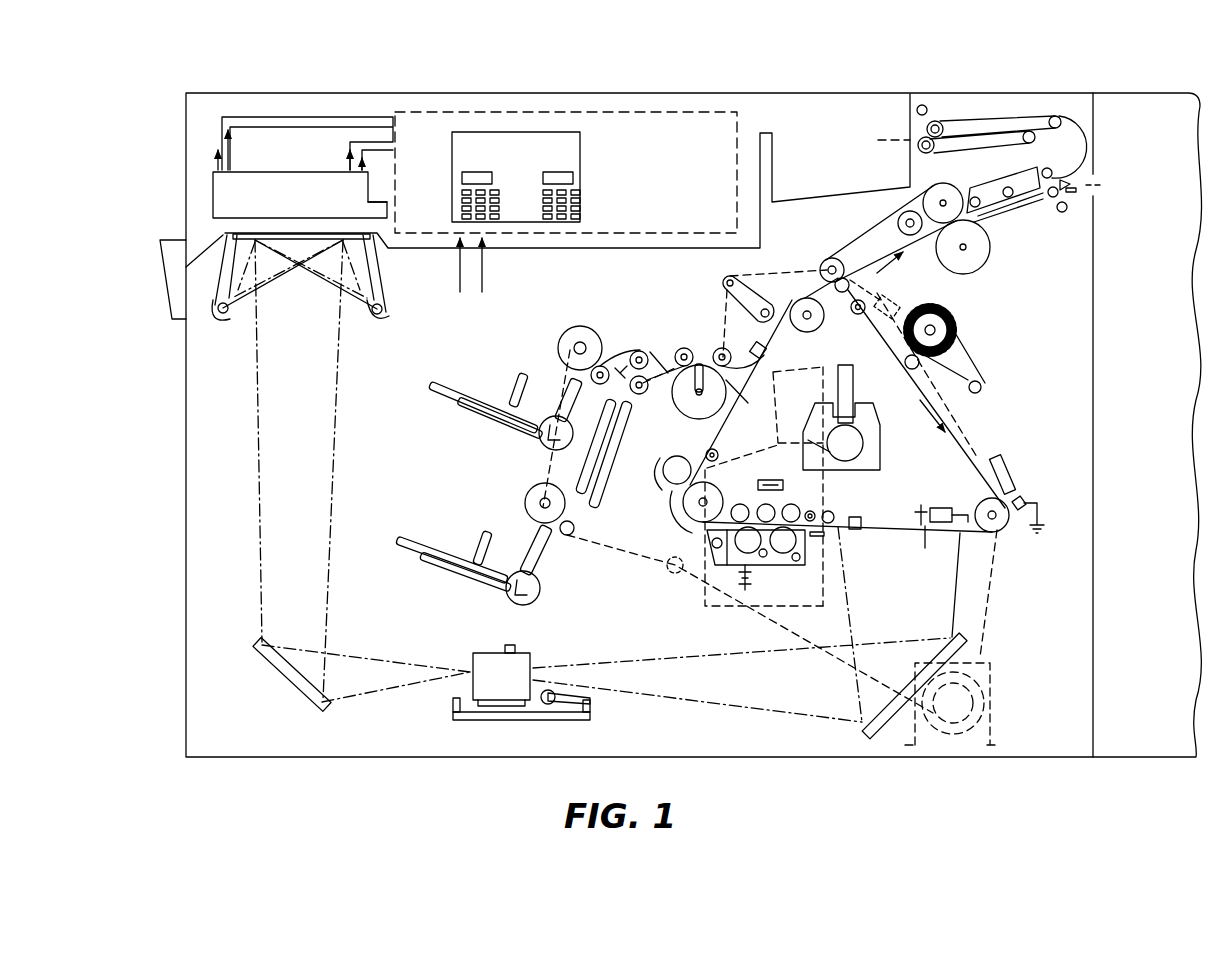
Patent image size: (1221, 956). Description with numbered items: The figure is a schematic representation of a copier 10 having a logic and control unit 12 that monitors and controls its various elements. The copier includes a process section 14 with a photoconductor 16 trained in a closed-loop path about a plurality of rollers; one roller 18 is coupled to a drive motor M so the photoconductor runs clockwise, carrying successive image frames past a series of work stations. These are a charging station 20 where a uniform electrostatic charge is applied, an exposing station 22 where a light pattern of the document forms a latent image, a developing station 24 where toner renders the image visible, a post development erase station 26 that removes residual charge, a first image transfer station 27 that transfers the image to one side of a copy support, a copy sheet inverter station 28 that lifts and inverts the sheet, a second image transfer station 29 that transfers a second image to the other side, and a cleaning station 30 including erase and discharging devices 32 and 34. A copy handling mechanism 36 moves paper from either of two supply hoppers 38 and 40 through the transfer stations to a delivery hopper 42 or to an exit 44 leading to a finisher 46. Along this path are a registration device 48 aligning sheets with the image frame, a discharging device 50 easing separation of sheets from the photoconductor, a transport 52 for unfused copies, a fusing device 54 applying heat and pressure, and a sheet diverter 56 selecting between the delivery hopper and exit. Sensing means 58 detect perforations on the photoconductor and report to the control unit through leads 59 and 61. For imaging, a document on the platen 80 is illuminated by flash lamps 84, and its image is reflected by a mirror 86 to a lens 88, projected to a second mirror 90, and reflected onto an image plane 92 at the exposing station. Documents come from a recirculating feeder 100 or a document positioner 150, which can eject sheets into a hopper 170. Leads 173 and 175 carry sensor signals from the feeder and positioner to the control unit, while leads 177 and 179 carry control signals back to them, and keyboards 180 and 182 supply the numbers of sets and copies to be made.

The copier 10 is at (1012, 92).
The logic and control unit 12 is at (745, 122).
The process section 14 is at (992, 420).
The photoconductor 16 is at (953, 560).
The roller 18 is at (1001, 532).
The charging station 20 is at (1012, 468).
The exposing station 22 is at (902, 517).
The developing station 24 is at (772, 566).
The post development erase station 26 is at (718, 459).
The first image transfer station 27 is at (752, 345).
The copy sheet inverter station 28 is at (720, 290).
The second image transfer station 29 is at (797, 283).
The cleaning station 30 is at (888, 295).
The erase device 32 is at (856, 316).
The discharging device 34 is at (916, 311).
The copy handling mechanism 36 is at (542, 458).
The supply hopper 38 is at (433, 396).
The supply hopper 40 is at (421, 553).
The delivery hopper 42 is at (852, 124).
The exit 44 is at (1104, 186).
The finisher 46 is at (1165, 125).
The registration device 48 is at (724, 392).
The discharging device 50 is at (824, 276).
The transport 52 is at (874, 248).
The fusing device 54 is at (991, 248).
The sheet diverter 56 is at (1072, 180).
The sensing means 58 is at (946, 508).
The lead 59 is at (482, 270).
The lead 61 is at (460, 270).
The platen 80 is at (283, 234).
The flash lamps 84 is at (223, 313).
The mirror 86 is at (276, 668).
The lens 88 is at (528, 720).
The second mirror 90 is at (860, 728).
The image plane 92 is at (878, 533).
The recirculating feeder 100 is at (208, 197).
The document positioner 150 is at (392, 208).
The hopper 170 is at (158, 244).
The leads 173 is at (226, 128).
The leads 175 is at (362, 154).
The leads 177 is at (216, 148).
The leads 179 is at (350, 146).
The keyboard 180 is at (494, 190).
The keyboard 182 is at (580, 172).
The drive motor M is at (988, 691).